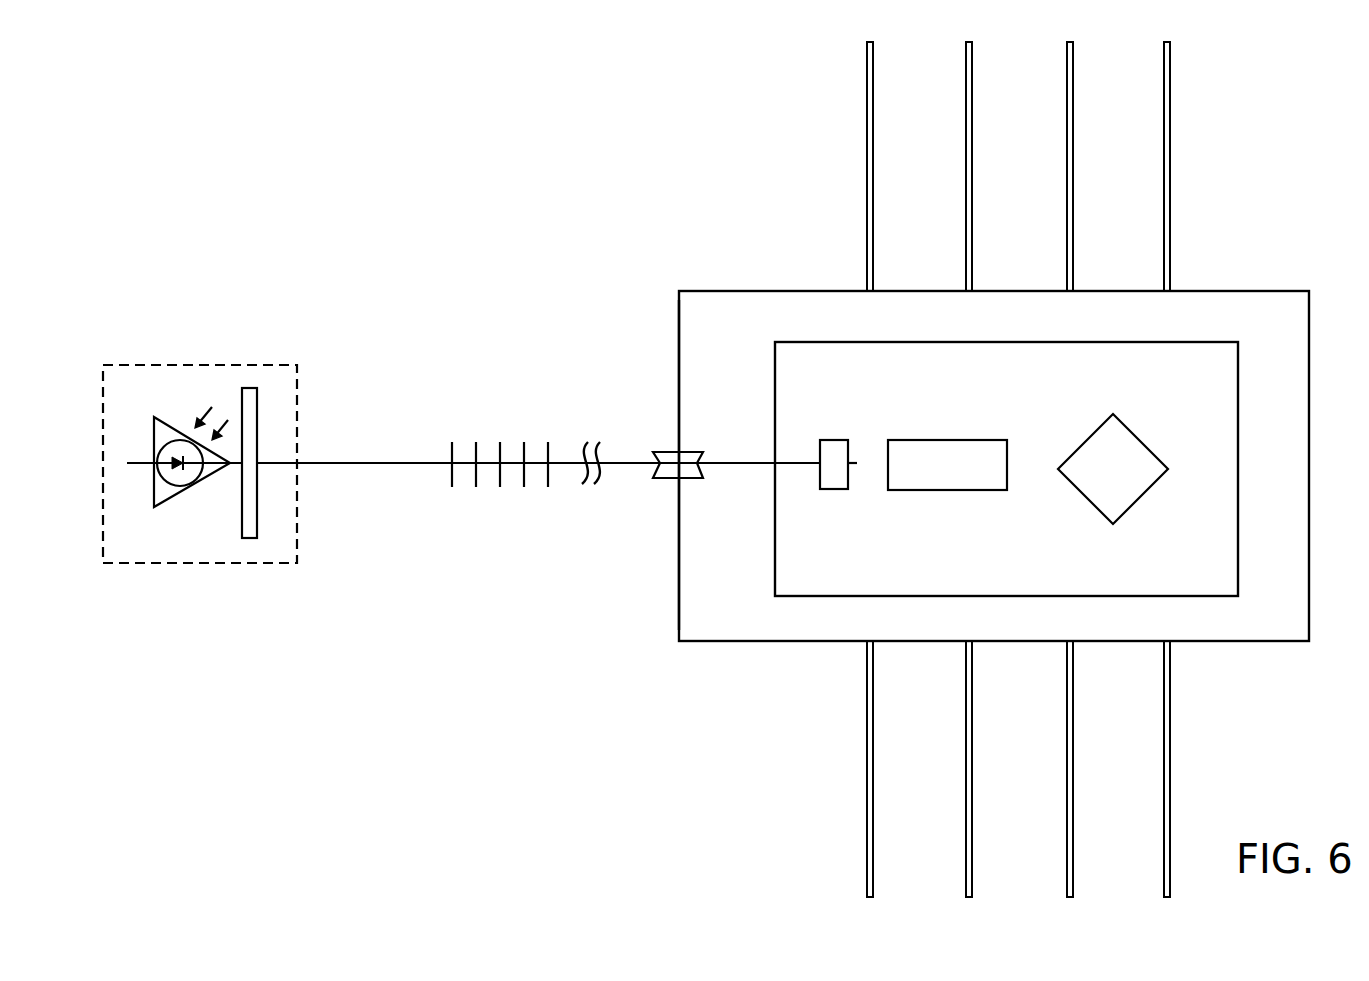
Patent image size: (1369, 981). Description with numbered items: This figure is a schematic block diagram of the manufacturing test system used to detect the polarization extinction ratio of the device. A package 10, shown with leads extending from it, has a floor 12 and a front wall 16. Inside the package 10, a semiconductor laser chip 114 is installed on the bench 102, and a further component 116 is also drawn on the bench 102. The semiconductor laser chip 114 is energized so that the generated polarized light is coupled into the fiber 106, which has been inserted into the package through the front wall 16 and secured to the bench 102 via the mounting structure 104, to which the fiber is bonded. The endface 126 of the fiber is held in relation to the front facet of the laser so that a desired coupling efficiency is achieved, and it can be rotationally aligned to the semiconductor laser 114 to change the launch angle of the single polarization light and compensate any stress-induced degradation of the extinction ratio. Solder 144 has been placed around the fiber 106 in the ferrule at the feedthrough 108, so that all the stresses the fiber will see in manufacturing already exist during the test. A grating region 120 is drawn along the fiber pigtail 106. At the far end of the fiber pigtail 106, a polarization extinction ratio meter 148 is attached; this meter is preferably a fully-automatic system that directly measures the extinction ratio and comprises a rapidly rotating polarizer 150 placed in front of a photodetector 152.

The package 10 is at (1246, 292).
The floor 12 is at (1263, 490).
The front wall 16 is at (679, 358).
The bench 102 is at (1170, 343).
The mounting structure 104 is at (828, 440).
The fiber 106 is at (372, 463).
The fiber connector 108 is at (666, 452).
The semiconductor laser chip 114 is at (935, 490).
The control circuit 116 is at (1143, 441).
The fiber Bragg grating 120 is at (563, 425).
The endface 126 is at (858, 468).
The solder 144 is at (655, 469).
The polarization extinction ratio meter 148 is at (254, 365).
The rotating polarizer 150 is at (258, 409).
The photodetector 152 is at (181, 428).